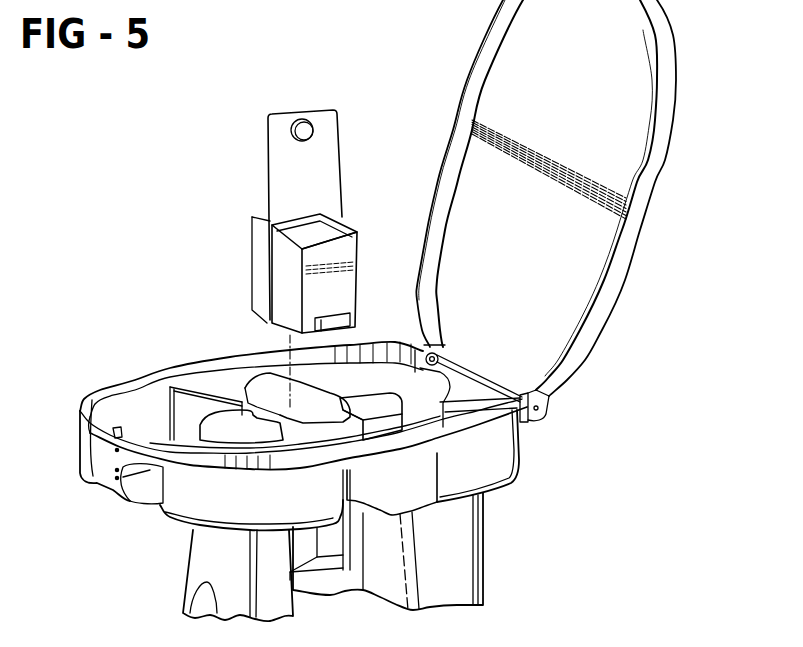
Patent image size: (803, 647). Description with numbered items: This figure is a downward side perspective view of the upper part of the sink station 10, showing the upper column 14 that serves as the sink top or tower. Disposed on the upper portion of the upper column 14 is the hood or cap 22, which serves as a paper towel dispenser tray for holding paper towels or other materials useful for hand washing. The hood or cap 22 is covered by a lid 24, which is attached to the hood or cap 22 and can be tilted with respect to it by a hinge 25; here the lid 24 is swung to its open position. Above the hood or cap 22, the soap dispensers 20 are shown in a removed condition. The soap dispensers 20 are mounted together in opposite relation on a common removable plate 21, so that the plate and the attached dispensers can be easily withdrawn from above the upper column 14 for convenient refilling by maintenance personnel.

The sink station 10 is at (100, 183).
The upper column 14 is at (485, 540).
The soap dispensers 20 is at (355, 260).
The removable plate 21 is at (340, 153).
The hood or cap 22 is at (527, 453).
The lid 24 is at (656, 196).
The hinge 25 is at (543, 408).